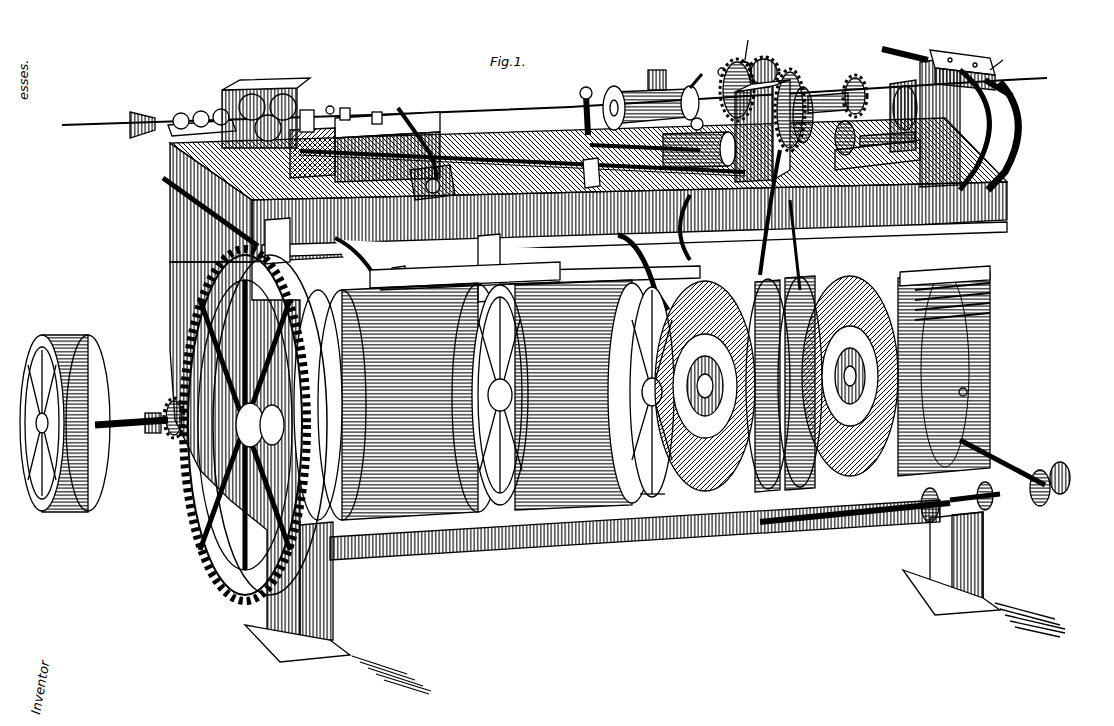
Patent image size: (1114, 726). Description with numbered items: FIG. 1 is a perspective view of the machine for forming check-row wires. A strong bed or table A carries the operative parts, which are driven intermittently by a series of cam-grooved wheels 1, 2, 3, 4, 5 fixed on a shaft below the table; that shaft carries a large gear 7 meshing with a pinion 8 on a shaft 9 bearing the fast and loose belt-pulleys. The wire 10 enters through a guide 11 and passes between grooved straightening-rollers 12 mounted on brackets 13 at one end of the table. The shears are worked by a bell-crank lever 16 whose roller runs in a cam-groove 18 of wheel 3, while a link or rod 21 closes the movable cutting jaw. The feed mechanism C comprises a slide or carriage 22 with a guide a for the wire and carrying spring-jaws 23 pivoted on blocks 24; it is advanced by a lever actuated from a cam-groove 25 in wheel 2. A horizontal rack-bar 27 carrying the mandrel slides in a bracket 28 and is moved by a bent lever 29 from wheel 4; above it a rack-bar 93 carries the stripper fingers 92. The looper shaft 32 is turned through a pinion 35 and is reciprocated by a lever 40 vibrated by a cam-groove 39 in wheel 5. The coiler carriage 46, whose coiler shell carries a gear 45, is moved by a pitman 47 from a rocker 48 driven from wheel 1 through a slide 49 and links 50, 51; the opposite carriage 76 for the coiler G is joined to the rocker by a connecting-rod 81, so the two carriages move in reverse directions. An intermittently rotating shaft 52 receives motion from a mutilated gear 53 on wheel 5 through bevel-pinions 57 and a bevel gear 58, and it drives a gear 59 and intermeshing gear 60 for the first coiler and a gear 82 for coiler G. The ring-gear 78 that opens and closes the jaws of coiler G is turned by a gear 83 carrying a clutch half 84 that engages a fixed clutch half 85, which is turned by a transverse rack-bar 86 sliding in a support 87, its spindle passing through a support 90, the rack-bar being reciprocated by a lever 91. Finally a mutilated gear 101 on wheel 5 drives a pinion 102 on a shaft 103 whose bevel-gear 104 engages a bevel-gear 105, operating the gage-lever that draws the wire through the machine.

The cam-grooved wheel 1 is at (399, 401).
The cam-grooved wheel 2 is at (573, 395).
The cam-grooved wheel 3 is at (722, 385).
The cam-grooved wheel 4 is at (800, 383).
The cam-grooved wheel 5 is at (964, 393).
The large gear 7 is at (255, 425).
The pinion 8 is at (168, 405).
The pulley shaft 9 is at (94, 423).
The wire 10 is at (554, 94).
The guide 11 is at (138, 115).
The grooved straightening-rollers 12 is at (200, 117).
The brackets 13 is at (158, 134).
The bent or bell-crank lever 16 is at (645, 262).
The cam-groove 18 is at (652, 487).
The link or rod 21 is at (580, 100).
The slide or carriage 22 is at (462, 126).
The spring-jaws 23 is at (382, 105).
The blocks 24 is at (367, 102).
The cam-groove 25 is at (590, 290).
The horizontal rack-bar 27 is at (762, 131).
The bracket 28 is at (737, 60).
The bent lever 29 is at (760, 260).
The looper shaft 32 is at (693, 75).
The pinion 35 is at (658, 70).
The cam-groove 39 is at (905, 360).
The lever 40 is at (791, 245).
The gear 45 is at (704, 59).
The casting or carriage 46 is at (651, 108).
The pitman 47 is at (517, 150).
The rocker 48 is at (426, 145).
The slide 49 is at (343, 246).
The link 50 is at (393, 266).
The link 51 is at (455, 276).
The shaft 52 is at (589, 173).
The mutilated gear 53 is at (965, 318).
The bevel-pinions 57 is at (486, 262).
The bevel gear 58 is at (877, 155).
The gear 59 is at (699, 150).
The intermeshing gear 60 is at (646, 134).
The carriage 76 is at (828, 91).
The ring-gear 78 is at (764, 58).
The connecting-rod 81 is at (695, 227).
The gear 82 is at (871, 120).
The gear 83 is at (804, 86).
The clutch half 84 is at (855, 89).
The clutch half 85 is at (921, 122).
The transversely-arranged rack-bar 86 is at (905, 46).
The support 87 is at (961, 61).
The support 90 is at (1003, 58).
The lever 91 is at (1000, 135).
The fingers 92 is at (753, 39).
The rack-bar 93 is at (791, 72).
The mutilated gear 101 is at (945, 293).
The pinion 102 is at (925, 522).
The rotary shaft 103 is at (985, 506).
The bevel-gear 104 is at (1045, 505).
The bevel-gear 105 is at (1036, 470).
The bed or table A is at (606, 406).
The feed mechanism C is at (365, 133).
The coiler G is at (729, 63).
The guide for the wire a is at (325, 94).